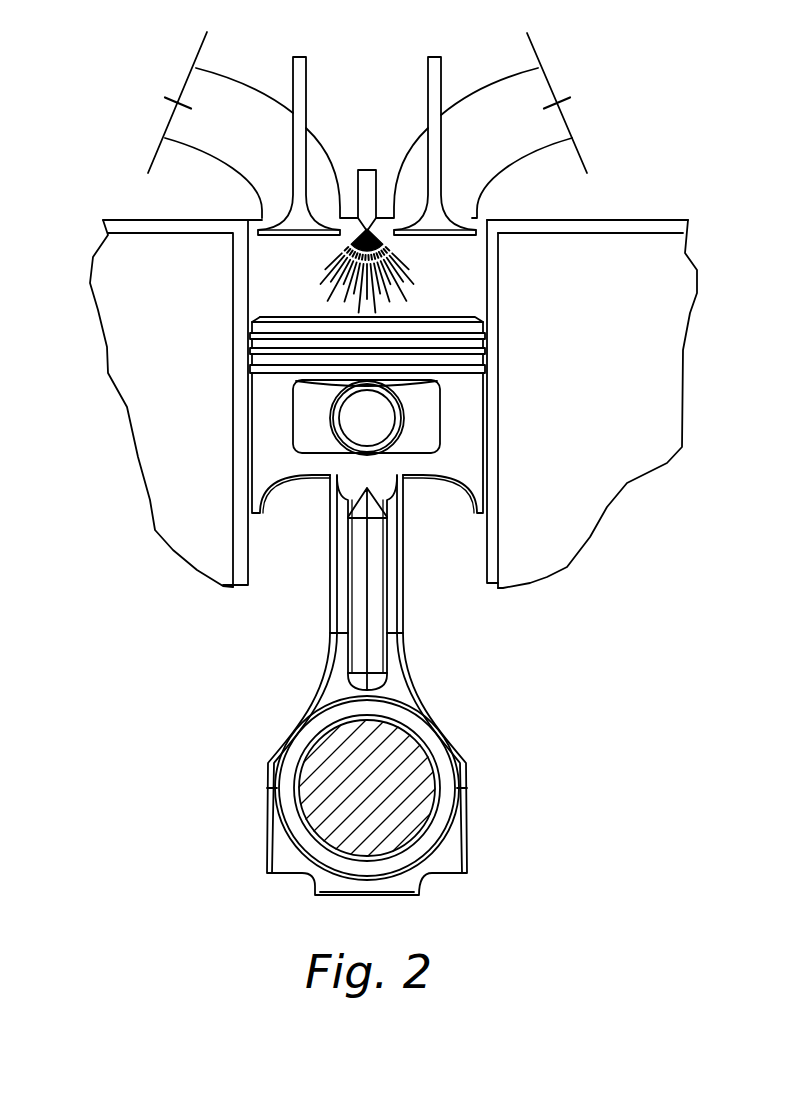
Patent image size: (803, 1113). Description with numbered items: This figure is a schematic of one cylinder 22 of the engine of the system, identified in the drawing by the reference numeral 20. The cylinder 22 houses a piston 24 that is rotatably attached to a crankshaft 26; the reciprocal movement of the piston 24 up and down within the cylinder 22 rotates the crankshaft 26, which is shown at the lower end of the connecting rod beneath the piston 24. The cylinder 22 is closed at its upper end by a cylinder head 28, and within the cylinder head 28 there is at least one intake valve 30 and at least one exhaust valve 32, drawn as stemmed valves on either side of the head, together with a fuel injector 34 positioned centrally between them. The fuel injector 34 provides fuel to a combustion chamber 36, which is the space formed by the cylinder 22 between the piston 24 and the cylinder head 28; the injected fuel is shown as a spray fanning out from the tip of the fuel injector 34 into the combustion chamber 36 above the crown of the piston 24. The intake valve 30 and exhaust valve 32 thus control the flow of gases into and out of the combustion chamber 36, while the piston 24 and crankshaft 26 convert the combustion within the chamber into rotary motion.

The internal combustion engine 20 is at (628, 228).
The cylinder 22 is at (182, 277).
The piston 24 is at (462, 402).
The crankshaft 26 is at (397, 747).
The cylinder head 28 is at (189, 392).
The intake valve 30 is at (293, 75).
The exhaust valve 32 is at (440, 77).
The fuel injector 34 is at (379, 173).
The combustion chamber 36 is at (470, 265).